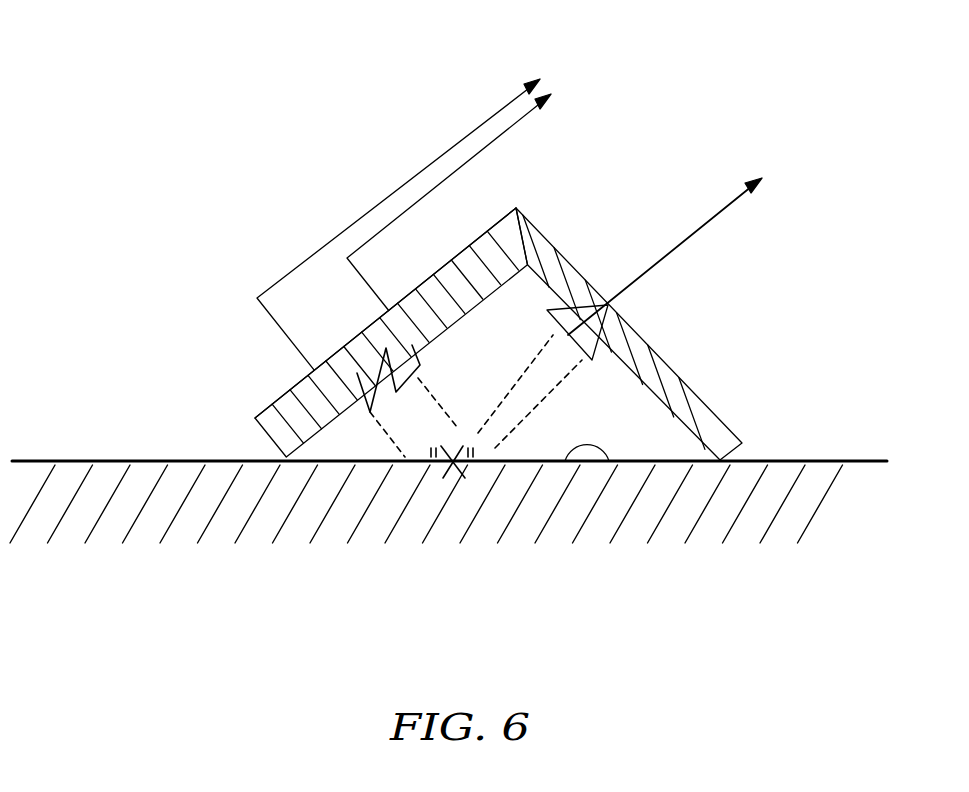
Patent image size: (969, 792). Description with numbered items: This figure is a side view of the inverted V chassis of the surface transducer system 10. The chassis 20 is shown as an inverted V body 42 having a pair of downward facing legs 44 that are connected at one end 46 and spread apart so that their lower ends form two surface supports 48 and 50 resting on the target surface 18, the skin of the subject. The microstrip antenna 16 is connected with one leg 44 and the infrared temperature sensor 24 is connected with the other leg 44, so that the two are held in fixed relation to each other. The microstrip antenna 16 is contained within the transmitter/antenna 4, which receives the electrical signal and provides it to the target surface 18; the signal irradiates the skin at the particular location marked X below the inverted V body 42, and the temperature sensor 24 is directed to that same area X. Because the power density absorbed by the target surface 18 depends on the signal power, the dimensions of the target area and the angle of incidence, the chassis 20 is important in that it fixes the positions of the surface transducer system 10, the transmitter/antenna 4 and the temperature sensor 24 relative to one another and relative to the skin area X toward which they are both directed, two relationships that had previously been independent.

The surface transducer system 10 is at (265, 150).
The chassis 20 is at (388, 212).
The infrared temperature sensor 24 is at (352, 339).
The microstrip antenna 16 is at (612, 328).
The downward facing legs 44 is at (477, 237).
The connected end 46 is at (536, 229).
The inverted V body 42 is at (522, 178).
The transmitter/antenna 4 is at (711, 218).
The target surface 18 is at (608, 463).
The surface support 48 is at (264, 434).
The surface support 50 is at (738, 447).